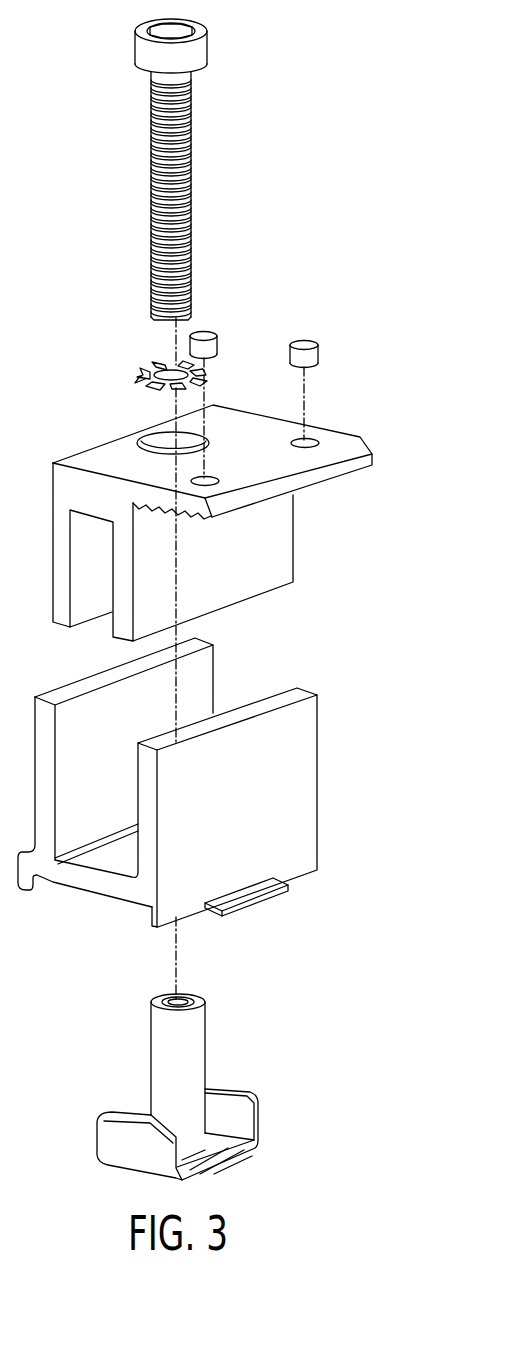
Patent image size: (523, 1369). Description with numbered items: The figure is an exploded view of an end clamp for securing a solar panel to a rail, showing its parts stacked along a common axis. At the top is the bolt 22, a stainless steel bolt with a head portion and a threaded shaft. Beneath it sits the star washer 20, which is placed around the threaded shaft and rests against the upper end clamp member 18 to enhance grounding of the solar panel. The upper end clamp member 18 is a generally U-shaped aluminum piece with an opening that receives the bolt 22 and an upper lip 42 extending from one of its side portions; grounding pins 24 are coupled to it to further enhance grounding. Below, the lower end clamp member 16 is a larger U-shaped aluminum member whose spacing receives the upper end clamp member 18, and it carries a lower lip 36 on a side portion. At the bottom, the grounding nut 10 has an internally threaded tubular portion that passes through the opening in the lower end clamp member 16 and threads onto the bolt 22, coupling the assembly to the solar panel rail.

The grounding nut 10 is at (243, 1142).
The lower end clamp member 16 is at (167, 814).
The upper end clamp member 18 is at (212, 483).
The star washer 20 is at (136, 352).
The bolt 22 is at (229, 42).
The grounding pins 24 is at (305, 343).
The lower lip 36 is at (243, 897).
The upper lip 42 is at (193, 508).